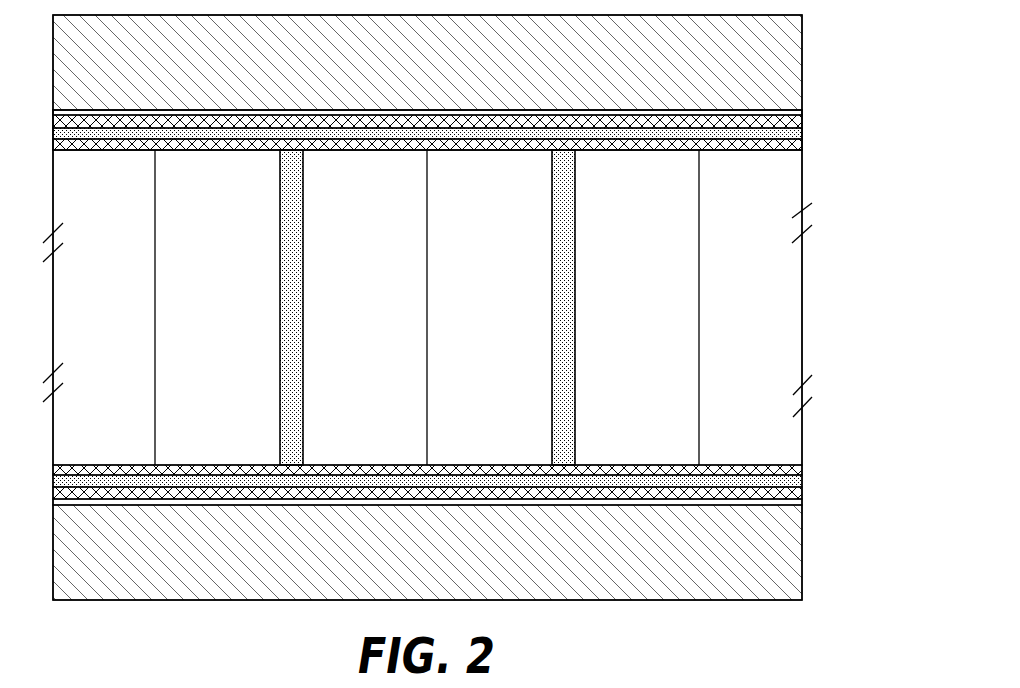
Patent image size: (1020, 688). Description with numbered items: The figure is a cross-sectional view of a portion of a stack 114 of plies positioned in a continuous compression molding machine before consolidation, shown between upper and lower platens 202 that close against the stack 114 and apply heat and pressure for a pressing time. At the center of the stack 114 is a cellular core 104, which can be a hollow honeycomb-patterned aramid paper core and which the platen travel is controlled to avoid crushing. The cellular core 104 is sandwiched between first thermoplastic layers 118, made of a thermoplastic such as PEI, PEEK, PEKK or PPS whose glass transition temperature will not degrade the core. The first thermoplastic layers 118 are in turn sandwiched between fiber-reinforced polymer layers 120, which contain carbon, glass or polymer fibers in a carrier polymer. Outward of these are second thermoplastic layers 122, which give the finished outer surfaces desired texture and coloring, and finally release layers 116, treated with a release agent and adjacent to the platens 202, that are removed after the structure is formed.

The cellular core 104 is at (505, 298).
The stack 114 is at (815, 132).
The release layers 116 is at (430, 113).
The first thermoplastic layers 118 is at (165, 152).
The fiber-reinforced polymer layers 120 is at (322, 133).
The second thermoplastic layers 122 is at (585, 120).
The platens 202 is at (368, 75).